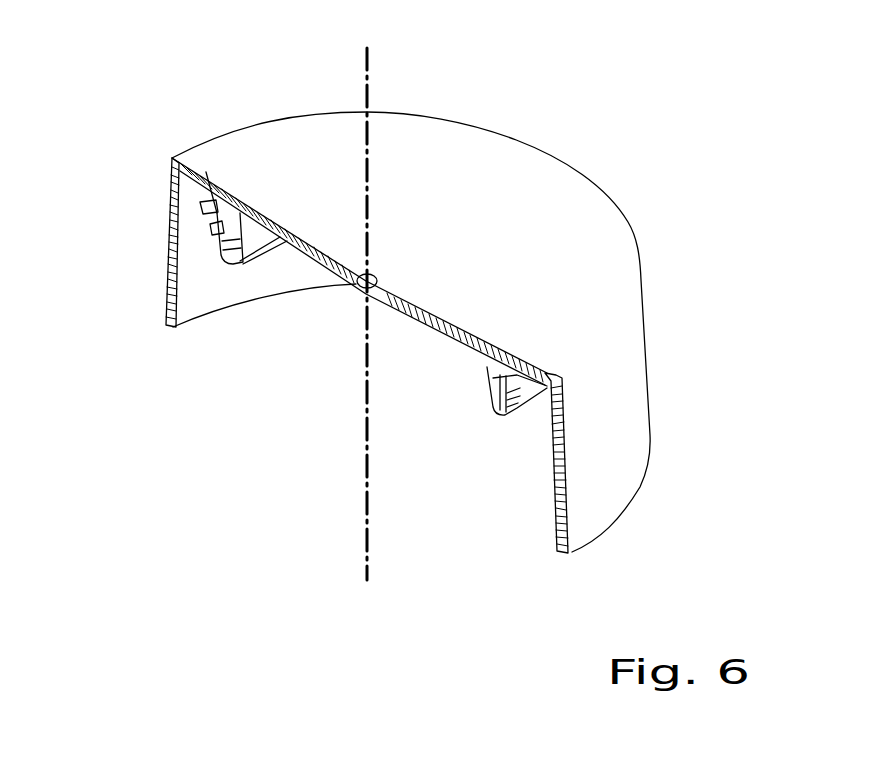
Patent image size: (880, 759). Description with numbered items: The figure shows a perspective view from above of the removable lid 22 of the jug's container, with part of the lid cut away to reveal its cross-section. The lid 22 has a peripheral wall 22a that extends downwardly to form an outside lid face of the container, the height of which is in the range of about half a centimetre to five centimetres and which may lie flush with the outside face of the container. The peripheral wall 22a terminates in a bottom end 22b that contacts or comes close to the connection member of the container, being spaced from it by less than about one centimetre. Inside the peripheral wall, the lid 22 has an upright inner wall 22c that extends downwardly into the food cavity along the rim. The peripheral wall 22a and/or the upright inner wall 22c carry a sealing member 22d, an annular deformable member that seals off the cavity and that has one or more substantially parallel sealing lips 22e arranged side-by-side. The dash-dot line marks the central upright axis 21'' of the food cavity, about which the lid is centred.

The removable lid 22 is at (396, 309).
The peripheral wall 22a is at (627, 440).
The bottom end 22b is at (167, 323).
The upright inner wall 22c is at (493, 393).
The sealing member 22d is at (507, 413).
The sealing lips 22e is at (212, 230).
The central upright axis 21'' is at (327, 314).